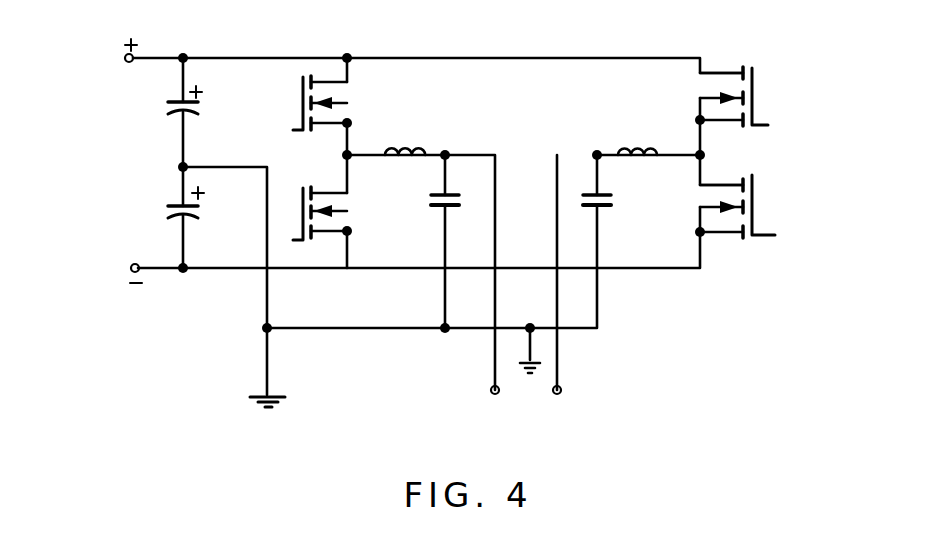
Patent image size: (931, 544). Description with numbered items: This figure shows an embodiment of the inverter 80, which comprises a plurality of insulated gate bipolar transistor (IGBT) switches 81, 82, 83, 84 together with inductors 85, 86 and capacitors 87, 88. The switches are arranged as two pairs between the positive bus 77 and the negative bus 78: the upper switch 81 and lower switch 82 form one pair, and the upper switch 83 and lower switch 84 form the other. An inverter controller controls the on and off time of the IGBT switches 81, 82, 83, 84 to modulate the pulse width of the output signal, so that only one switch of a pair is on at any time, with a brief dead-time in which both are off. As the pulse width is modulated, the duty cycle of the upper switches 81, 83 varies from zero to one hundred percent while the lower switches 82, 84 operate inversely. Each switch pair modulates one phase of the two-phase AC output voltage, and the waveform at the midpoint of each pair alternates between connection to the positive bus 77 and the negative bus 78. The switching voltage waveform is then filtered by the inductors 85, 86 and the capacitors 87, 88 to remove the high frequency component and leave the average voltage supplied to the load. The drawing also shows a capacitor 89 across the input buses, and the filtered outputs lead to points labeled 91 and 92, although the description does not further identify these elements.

The positive bus 77 is at (111, 55).
The negative bus 78 is at (116, 270).
The inverter 80 is at (212, 330).
The IGBT switch 81 is at (347, 103).
The IGBT switch 82 is at (347, 212).
The IGBT switch 83 is at (755, 102).
The IGBT switch 84 is at (755, 212).
The inductor 85 is at (408, 151).
The inductor 86 is at (642, 151).
The capacitor 87 is at (444, 196).
The capacitor 88 is at (606, 203).
The input capacitor 89 is at (191, 216).
The output terminal (to 91) 91 is at (571, 404).
The output terminal (to 92) 92 is at (487, 404).